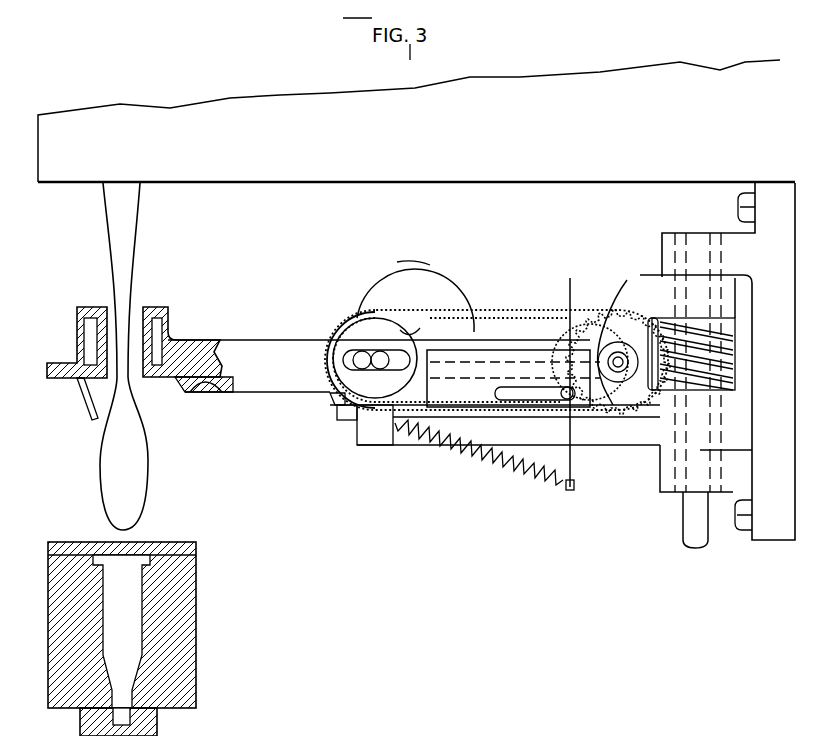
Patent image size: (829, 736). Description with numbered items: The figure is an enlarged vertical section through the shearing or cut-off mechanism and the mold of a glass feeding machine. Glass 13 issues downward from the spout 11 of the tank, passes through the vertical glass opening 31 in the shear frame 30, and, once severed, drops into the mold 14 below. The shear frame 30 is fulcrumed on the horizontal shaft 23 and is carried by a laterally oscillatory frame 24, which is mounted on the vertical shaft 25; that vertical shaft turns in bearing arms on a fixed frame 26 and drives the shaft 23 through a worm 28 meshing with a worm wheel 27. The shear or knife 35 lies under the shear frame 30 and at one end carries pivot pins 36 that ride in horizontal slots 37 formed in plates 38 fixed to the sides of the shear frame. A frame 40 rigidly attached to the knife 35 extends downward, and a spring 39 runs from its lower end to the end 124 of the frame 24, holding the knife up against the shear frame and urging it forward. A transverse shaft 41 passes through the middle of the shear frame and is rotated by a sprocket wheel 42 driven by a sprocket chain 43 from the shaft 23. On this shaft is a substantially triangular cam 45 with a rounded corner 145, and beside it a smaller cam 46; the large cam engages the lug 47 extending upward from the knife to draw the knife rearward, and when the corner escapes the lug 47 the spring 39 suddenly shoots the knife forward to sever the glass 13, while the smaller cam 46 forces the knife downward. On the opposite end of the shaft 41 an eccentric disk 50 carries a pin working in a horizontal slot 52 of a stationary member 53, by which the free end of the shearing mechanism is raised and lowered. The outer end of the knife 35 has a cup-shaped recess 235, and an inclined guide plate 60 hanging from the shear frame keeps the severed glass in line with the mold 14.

The spout 11 is at (298, 172).
The glass 13 is at (105, 451).
The mold 14 is at (183, 596).
The glass opening 31 is at (137, 322).
The recess 235 is at (203, 389).
The guide plate 60 is at (84, 403).
The shear frame 30 is at (276, 352).
The shear or knife 35 is at (282, 385).
The shaft 41 is at (356, 318).
The smaller cam 46 is at (376, 355).
The eccentric disk 50 is at (388, 336).
The cam 45 is at (430, 280).
The rounded corner 145 is at (407, 262).
The sprocket wheel 42 is at (414, 327).
The sprocket chain 43 is at (493, 368).
The lug 47 is at (528, 367).
The horizontal slots 37 is at (540, 388).
The plates 38 is at (573, 340).
The pivot pins 36 is at (572, 300).
The shaft 23 is at (615, 400).
The frame 26 is at (612, 326).
The worm wheel 27 is at (663, 395).
The frame 40 is at (571, 492).
The end of frame 124 is at (370, 442).
The frame 24 is at (545, 447).
The horizontal slot 52 is at (356, 410).
The stationary frame or member 53 is at (337, 398).
The spring 39 is at (497, 460).
The worm 28 is at (772, 467).
The vertical shaft 25 is at (688, 525).